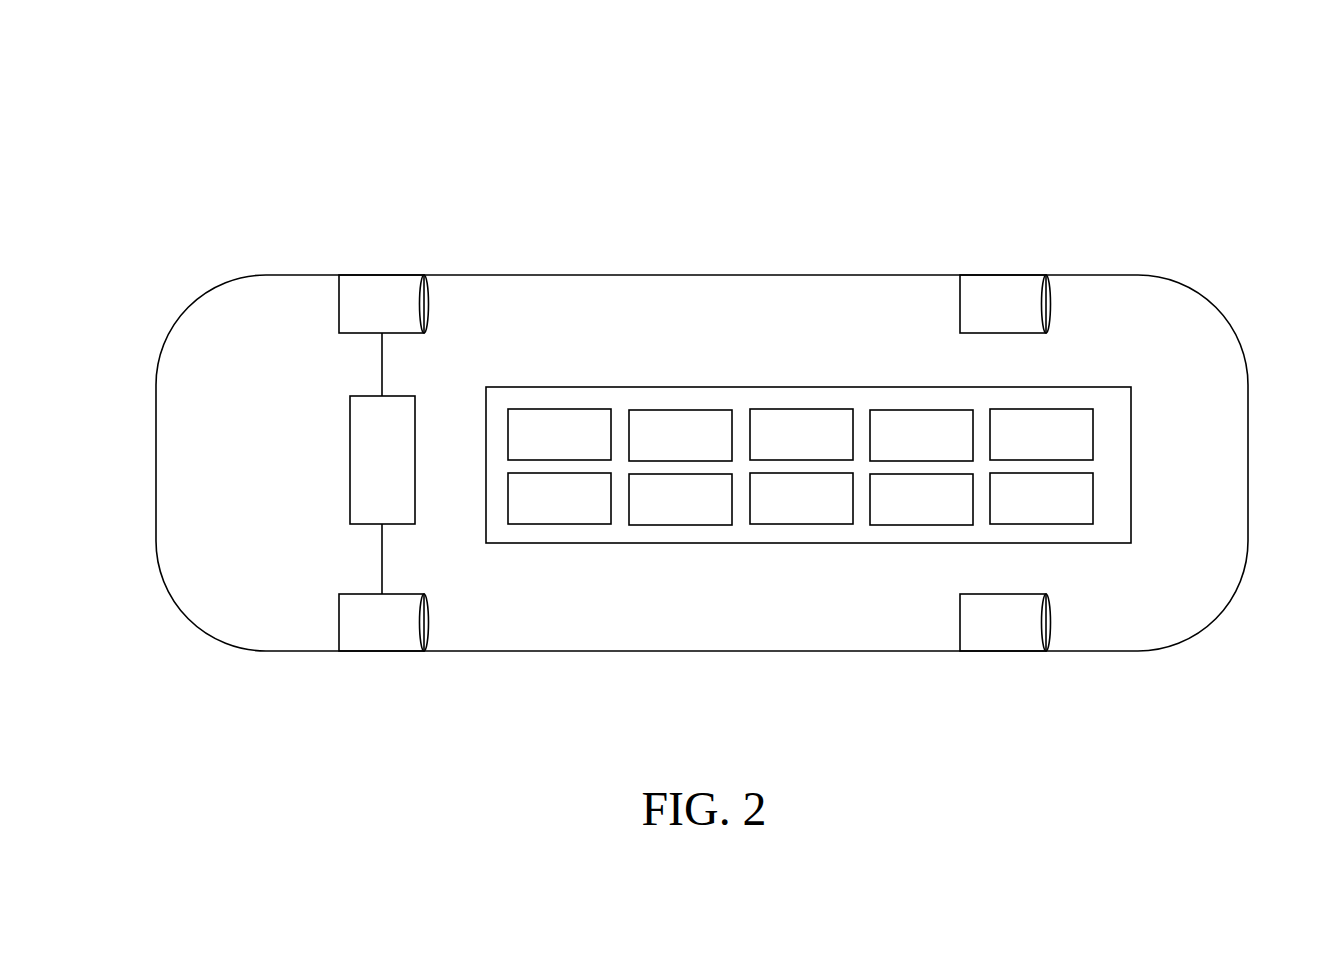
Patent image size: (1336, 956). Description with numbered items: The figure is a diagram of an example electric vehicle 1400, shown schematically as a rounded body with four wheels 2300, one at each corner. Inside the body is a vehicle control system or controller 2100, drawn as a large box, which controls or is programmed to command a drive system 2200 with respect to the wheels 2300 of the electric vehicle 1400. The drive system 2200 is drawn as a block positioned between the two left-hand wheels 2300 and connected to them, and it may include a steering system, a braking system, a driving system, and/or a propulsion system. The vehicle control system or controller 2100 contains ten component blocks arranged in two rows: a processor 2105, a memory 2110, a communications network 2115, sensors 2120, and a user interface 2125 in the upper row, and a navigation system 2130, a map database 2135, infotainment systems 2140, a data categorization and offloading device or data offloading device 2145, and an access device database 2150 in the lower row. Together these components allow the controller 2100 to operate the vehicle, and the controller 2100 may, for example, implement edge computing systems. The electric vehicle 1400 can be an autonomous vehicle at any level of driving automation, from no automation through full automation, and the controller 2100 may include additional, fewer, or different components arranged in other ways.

The electric vehicle 1400 is at (783, 117).
The vehicle control system or controller 2100 is at (711, 387).
The processor 2105 is at (535, 446).
The memory 2110 is at (656, 446).
The communications network 2115 is at (777, 446).
The sensors 2120 is at (897, 446).
The user interface 2125 is at (1017, 446).
The navigation system 2130 is at (535, 510).
The map database 2135 is at (656, 510).
The infotainment systems 2140 is at (777, 510).
The data categorization and offloading device 2145 is at (897, 510).
The access device database 2150 is at (1017, 510).
The drive system 2200 is at (350, 460).
The wheels 2300 is at (381, 275).